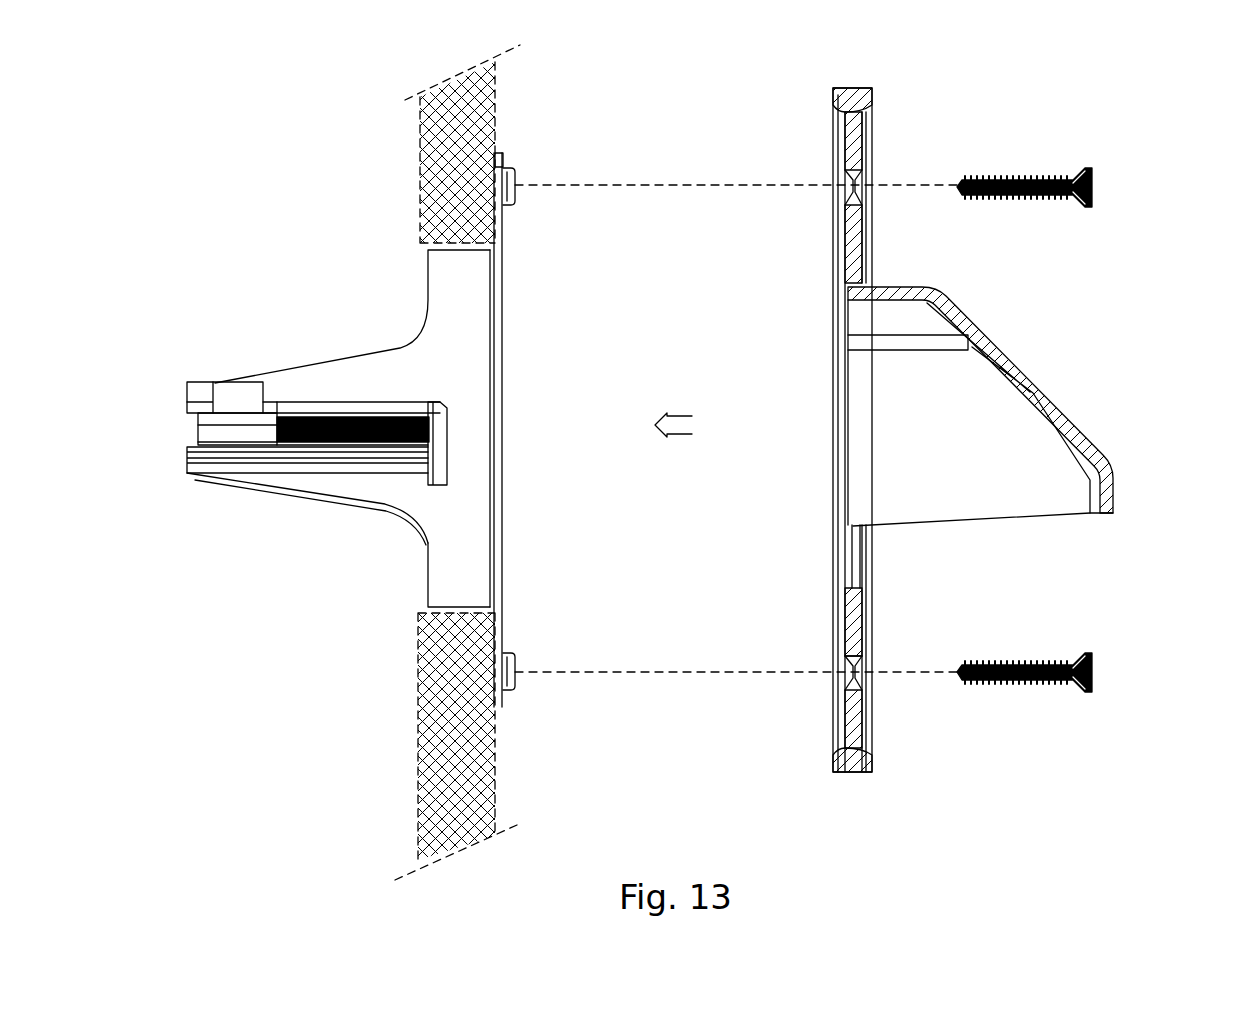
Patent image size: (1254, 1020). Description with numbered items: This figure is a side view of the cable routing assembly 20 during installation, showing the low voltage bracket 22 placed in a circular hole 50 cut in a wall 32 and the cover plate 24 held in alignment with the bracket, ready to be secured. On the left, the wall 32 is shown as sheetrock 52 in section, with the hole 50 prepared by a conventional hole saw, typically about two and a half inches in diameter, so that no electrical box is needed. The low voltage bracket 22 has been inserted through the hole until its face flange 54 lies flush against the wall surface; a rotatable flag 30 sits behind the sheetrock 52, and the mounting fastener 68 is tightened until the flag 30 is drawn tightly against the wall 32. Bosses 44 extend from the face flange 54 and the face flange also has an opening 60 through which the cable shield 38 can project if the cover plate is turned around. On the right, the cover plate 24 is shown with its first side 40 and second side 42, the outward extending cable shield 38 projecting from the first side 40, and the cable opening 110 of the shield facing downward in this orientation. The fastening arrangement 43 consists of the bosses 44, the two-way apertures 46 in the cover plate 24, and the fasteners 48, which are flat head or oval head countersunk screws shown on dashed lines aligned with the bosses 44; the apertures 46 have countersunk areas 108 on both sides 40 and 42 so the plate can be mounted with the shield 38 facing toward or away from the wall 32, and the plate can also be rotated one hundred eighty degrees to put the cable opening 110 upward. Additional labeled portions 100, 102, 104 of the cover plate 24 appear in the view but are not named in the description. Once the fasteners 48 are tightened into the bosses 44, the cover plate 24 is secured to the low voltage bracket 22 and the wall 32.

The cable routing assembly 20 is at (975, 122).
The low voltage bracket 22 is at (415, 335).
The cover plate 24 is at (855, 90).
The rotatable flags 30 is at (215, 385).
The wall 32 is at (457, 462).
The cable shield 38 is at (1045, 385).
The first side 40 is at (862, 401).
The second side 42 is at (840, 238).
The fastening arrangement 43 is at (1125, 168).
The bosses 44 is at (513, 205).
The two-way apertures 46 is at (848, 180).
The fastener 48 is at (1030, 197).
The circular hole 50 is at (425, 247).
The sheetrock 52 is at (445, 122).
The face flange 54 is at (503, 170).
The opening 60 is at (505, 370).
The mounting fasteners 68 is at (365, 440).
The plate end 100 is at (840, 92).
The plate web 102 is at (842, 395).
The slot 104 is at (845, 606).
The countersunk areas 108 is at (850, 665).
The cable opening 110 is at (985, 510).